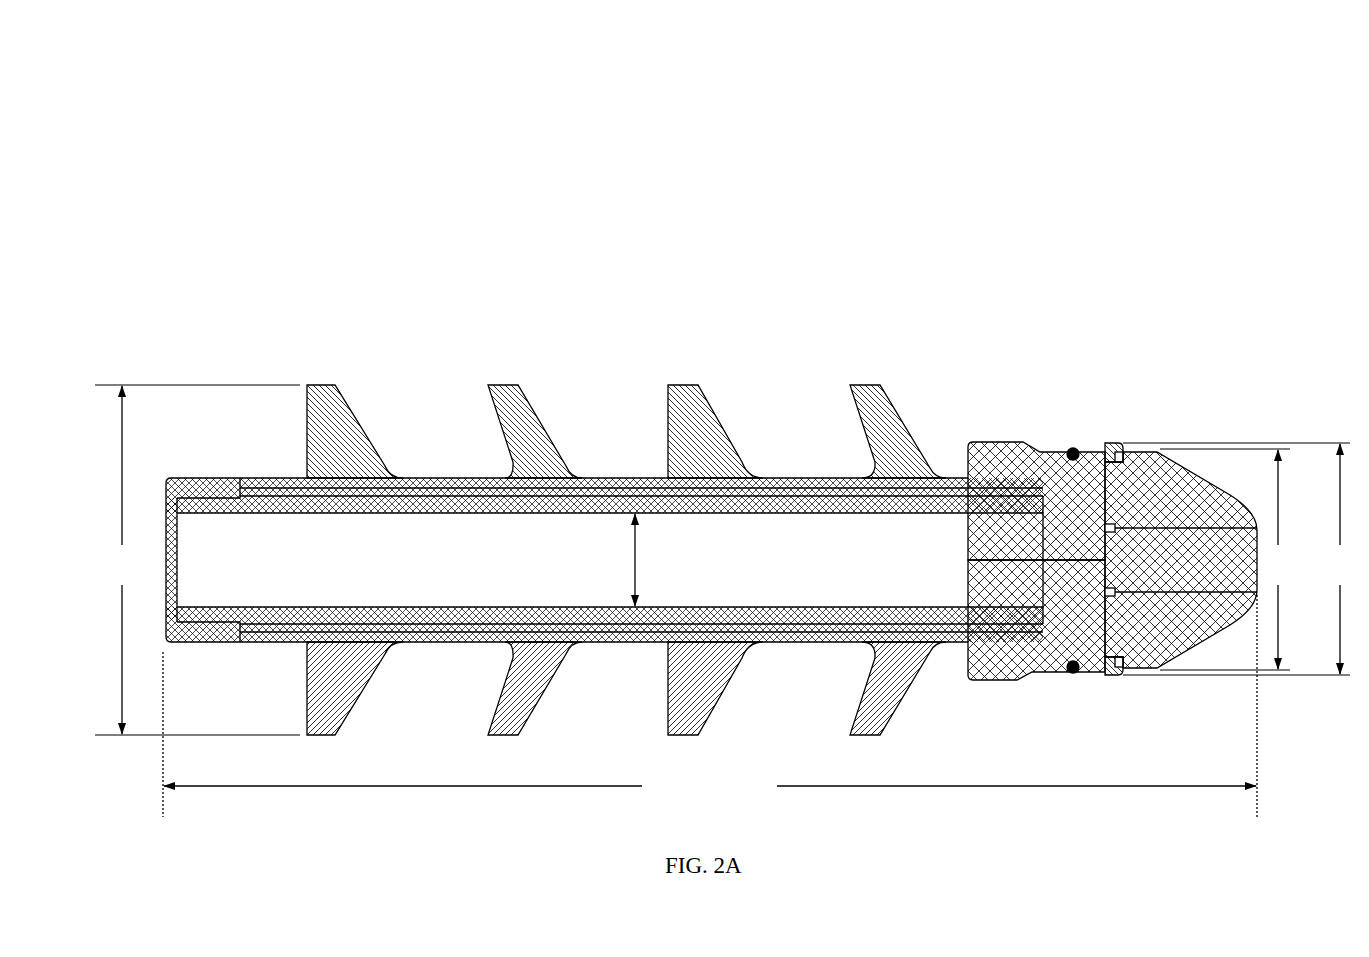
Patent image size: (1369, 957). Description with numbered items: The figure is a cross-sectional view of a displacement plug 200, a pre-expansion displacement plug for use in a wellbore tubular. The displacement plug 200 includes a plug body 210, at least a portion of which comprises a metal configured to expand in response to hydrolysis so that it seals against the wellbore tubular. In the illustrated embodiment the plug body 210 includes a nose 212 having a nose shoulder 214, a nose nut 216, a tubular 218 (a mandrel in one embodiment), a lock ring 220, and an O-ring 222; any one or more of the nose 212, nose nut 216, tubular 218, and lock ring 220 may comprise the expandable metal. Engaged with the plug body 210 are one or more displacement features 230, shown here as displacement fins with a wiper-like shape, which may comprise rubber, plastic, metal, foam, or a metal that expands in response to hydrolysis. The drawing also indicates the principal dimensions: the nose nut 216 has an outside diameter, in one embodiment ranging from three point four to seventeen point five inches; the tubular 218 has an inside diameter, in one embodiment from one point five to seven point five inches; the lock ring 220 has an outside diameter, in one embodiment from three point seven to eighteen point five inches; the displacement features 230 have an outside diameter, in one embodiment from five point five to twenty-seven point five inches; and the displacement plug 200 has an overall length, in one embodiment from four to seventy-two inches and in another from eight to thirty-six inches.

The displacement plug 200 is at (140, 118).
The plug body 210 is at (1057, 712).
The nose 212 is at (982, 438).
The nose shoulder 214 is at (1028, 673).
The nose nut 216 is at (1197, 478).
The tubular 218 is at (748, 503).
The lock ring 220 is at (1113, 673).
The O-ring 222 is at (1068, 449).
The displacement features 230 is at (325, 385).